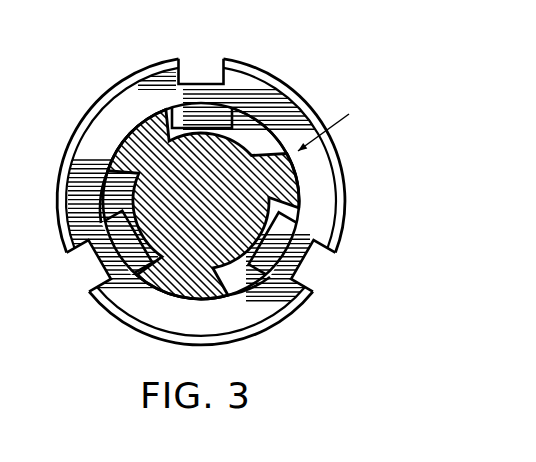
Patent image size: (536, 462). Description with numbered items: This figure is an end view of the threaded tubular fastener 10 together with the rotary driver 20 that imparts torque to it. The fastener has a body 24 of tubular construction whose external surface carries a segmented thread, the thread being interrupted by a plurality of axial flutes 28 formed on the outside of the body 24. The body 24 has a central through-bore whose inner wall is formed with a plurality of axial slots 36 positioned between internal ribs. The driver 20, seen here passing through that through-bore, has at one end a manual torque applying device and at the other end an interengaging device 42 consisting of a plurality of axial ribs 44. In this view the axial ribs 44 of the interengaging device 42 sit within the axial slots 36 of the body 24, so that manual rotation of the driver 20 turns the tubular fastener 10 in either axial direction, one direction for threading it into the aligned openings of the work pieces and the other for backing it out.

The threaded tubular fastener 10 is at (268, 231).
The rotary driver 20 is at (243, 195).
The body 24 is at (182, 178).
The axial flutes 28 is at (185, 66).
The axial slots 36 is at (118, 200).
The interengaging device 42 is at (336, 126).
The axial ribs 44 is at (133, 127).